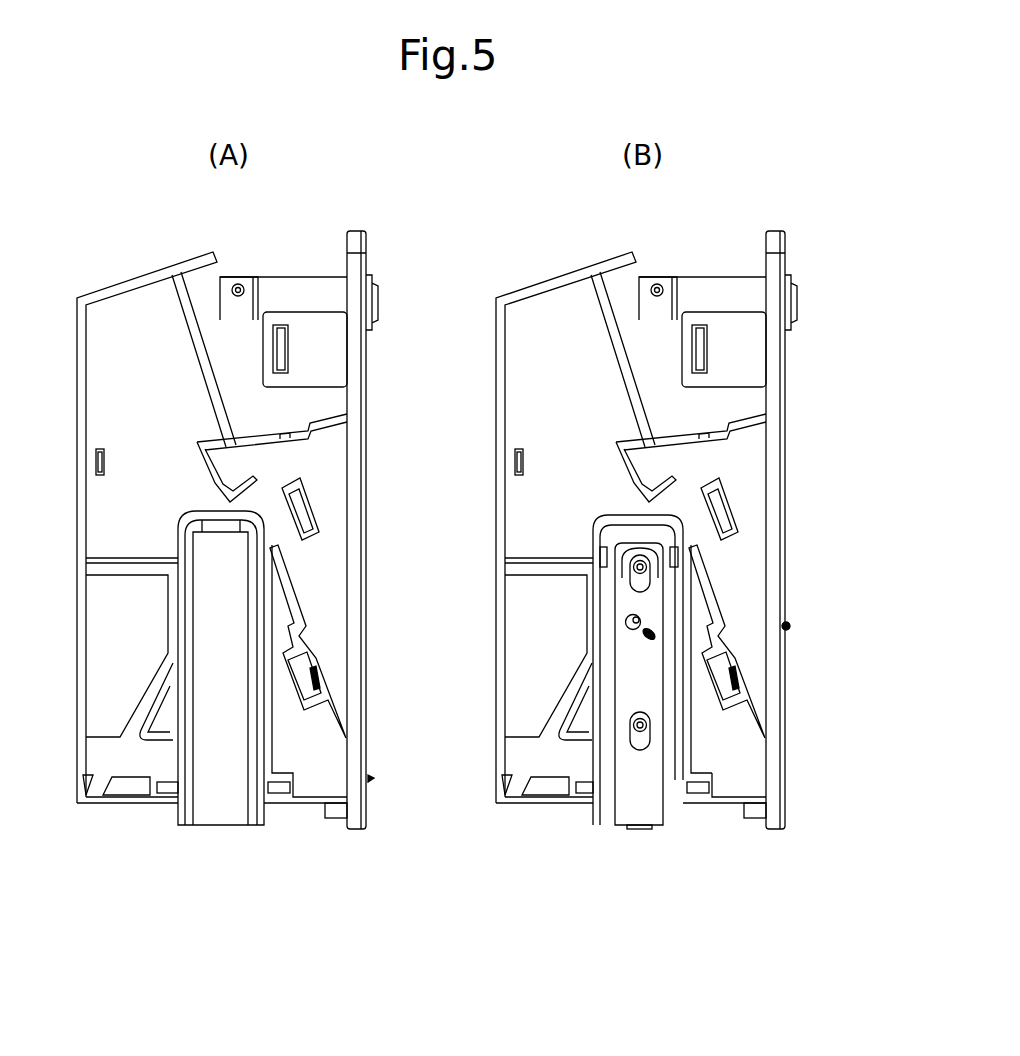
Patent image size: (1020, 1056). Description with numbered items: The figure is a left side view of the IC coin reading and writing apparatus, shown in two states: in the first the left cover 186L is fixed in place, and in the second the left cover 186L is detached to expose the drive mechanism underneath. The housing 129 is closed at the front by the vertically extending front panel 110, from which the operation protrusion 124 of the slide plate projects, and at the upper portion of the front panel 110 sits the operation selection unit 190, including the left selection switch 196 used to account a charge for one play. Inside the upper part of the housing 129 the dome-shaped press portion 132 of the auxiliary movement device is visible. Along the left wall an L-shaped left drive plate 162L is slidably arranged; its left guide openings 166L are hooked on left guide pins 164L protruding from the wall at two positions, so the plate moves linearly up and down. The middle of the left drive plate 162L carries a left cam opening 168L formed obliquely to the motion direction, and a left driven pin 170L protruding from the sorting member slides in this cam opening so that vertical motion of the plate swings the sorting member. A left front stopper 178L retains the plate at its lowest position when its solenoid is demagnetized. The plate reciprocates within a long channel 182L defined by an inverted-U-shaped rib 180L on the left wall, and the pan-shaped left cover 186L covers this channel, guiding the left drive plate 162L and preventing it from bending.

The front panel 110 is at (362, 229).
The operation protrusion 124 is at (790, 626).
The housing 129 is at (117, 282).
The press portion 132 is at (237, 280).
The left drive plate 162L is at (615, 812).
The left guide pins 164L is at (630, 562).
The left guide openings 166L is at (630, 585).
The left cam opening 168L is at (626, 630).
The left driven pin 170L is at (626, 620).
The left front stopper 178L is at (641, 624).
The inverted-U-shaped rib 180L is at (690, 693).
The long channel 182L is at (676, 747).
The left cover 186L is at (219, 813).
The operation selection unit 190 is at (799, 300).
The left selection switch 196 is at (378, 305).